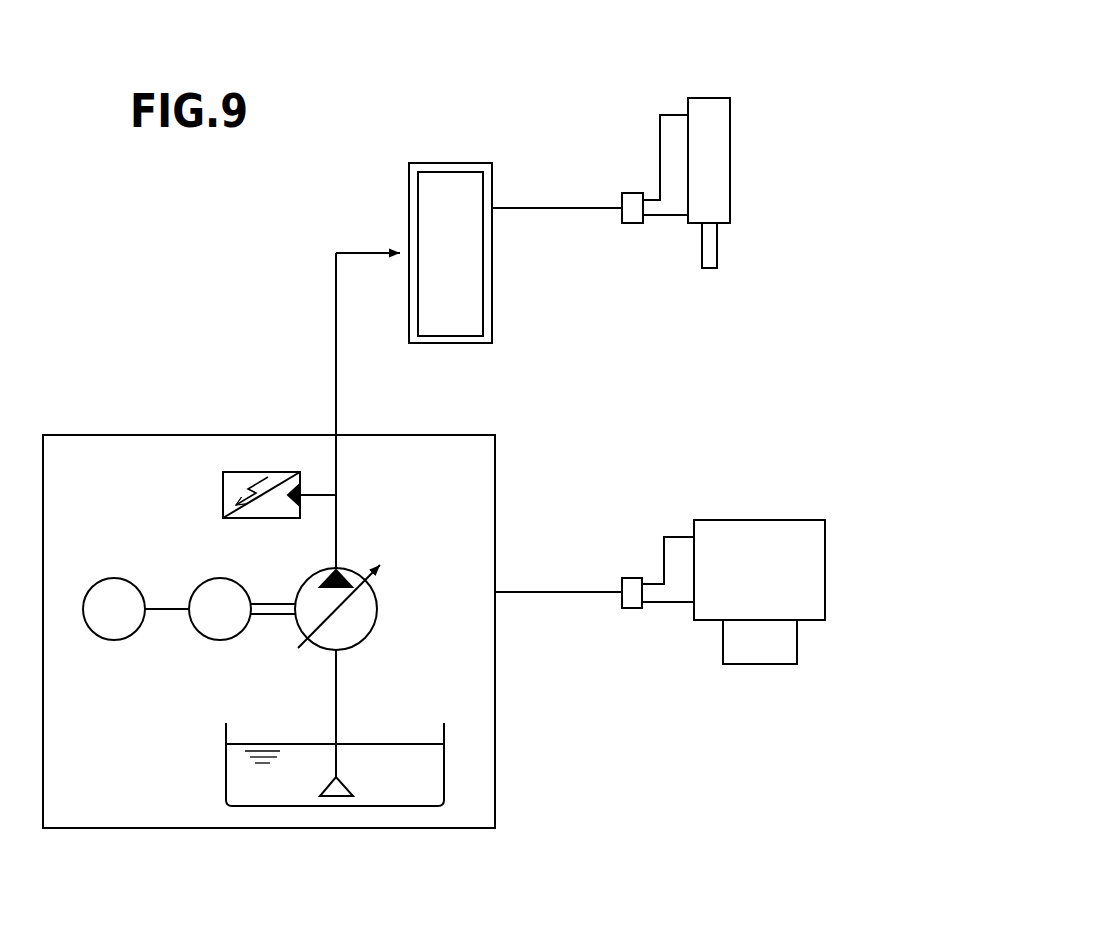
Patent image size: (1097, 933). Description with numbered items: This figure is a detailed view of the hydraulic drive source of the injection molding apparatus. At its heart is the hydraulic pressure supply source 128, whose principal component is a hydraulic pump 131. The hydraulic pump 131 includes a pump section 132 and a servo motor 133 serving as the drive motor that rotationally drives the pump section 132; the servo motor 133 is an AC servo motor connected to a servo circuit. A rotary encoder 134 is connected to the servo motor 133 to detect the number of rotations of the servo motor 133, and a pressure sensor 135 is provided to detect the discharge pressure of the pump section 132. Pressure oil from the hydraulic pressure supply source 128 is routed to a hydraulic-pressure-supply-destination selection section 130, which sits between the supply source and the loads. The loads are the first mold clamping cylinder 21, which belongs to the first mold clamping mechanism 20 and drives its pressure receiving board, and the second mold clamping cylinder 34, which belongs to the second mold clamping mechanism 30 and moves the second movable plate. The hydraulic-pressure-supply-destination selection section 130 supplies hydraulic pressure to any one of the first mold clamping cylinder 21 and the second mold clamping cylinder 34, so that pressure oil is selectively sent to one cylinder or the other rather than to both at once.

The first mold clamping mechanism 20 is at (721, 604).
The first mold clamping cylinder 21 is at (752, 530).
The second mold clamping mechanism 30 is at (713, 143).
The second mold clamping cylinder 34 is at (737, 85).
The hydraulic pressure supply source 128 is at (313, 828).
The hydraulic-pressure-supply-destination selection section 130 is at (447, 187).
The hydraulic pump 131 is at (376, 572).
The pump section 132 is at (367, 608).
The servo motor 133 is at (219, 640).
The rotary encoder 134 is at (114, 640).
The pressure sensor 135 is at (223, 485).